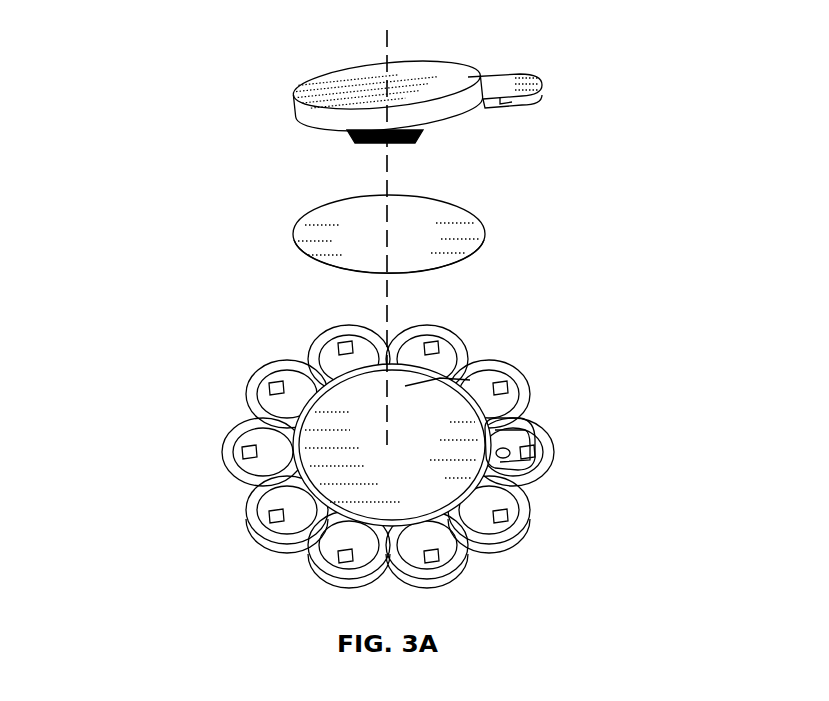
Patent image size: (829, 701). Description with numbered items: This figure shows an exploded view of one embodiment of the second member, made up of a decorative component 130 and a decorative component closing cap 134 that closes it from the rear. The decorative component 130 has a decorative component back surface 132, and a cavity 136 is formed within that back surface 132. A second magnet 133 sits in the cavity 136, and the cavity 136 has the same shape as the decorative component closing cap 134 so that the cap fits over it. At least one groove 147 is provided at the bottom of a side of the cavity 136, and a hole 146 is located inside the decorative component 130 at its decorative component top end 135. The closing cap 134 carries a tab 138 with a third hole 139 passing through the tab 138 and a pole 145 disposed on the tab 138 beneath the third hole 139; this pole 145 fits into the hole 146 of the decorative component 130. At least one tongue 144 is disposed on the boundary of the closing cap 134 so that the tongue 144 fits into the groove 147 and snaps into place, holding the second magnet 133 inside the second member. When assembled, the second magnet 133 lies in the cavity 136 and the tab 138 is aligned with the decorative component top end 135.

The decorative component 130 is at (396, 456).
The decorative component back surface 132 is at (262, 485).
The second magnet 133 is at (430, 253).
The decorative component closing cap 134 is at (282, 100).
The decorative component top end 135 is at (540, 450).
The cavity 136 is at (417, 473).
The tab 138 is at (503, 72).
The third hole 139 is at (535, 80).
The tongue 144 is at (355, 134).
The pole 145 is at (507, 100).
The hole 146 is at (503, 457).
The groove 147 is at (420, 387).